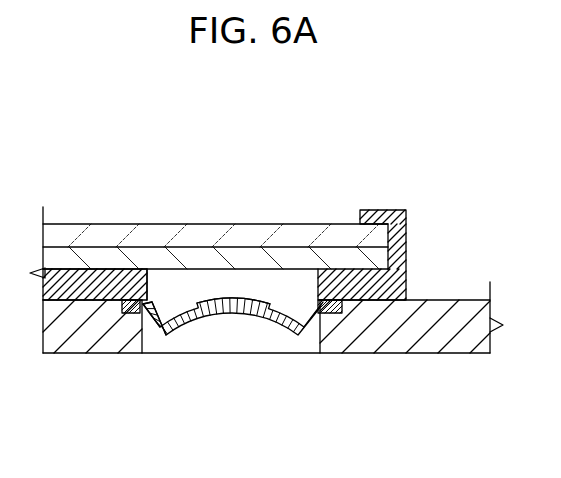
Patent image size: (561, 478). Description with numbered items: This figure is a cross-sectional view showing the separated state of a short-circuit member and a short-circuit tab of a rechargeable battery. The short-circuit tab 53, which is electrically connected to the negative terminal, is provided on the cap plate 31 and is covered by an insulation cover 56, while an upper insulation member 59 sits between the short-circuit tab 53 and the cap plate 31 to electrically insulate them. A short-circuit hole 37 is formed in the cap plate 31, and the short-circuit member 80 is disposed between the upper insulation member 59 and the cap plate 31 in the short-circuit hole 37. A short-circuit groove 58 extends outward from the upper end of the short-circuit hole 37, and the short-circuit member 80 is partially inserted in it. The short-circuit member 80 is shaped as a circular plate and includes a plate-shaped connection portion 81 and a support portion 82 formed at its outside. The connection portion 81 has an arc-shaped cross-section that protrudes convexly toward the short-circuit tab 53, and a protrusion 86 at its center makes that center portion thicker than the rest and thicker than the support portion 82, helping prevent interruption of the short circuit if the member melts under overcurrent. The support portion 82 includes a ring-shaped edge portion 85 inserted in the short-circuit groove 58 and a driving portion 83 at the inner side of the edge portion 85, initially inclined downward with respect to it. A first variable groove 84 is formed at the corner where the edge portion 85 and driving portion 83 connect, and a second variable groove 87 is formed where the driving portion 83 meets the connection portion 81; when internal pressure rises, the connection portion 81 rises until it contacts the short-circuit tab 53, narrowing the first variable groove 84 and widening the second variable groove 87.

The cap plate 31 is at (418, 336).
The short-circuit hole 37 is at (320, 340).
The short-circuit tab 53 is at (66, 262).
The insulation cover 56 is at (235, 248).
The short-circuit groove 58 is at (334, 304).
The upper insulation member 59 is at (400, 252).
The short-circuit member 80 is at (233, 290).
The connection portion 81 is at (284, 335).
The support portion 82 is at (130, 379).
The driving portion 83 is at (150, 338).
The first variable groove 84 is at (148, 302).
The edge portion 85 is at (128, 313).
The protrusion 86 is at (262, 300).
The second variable groove 87 is at (157, 308).